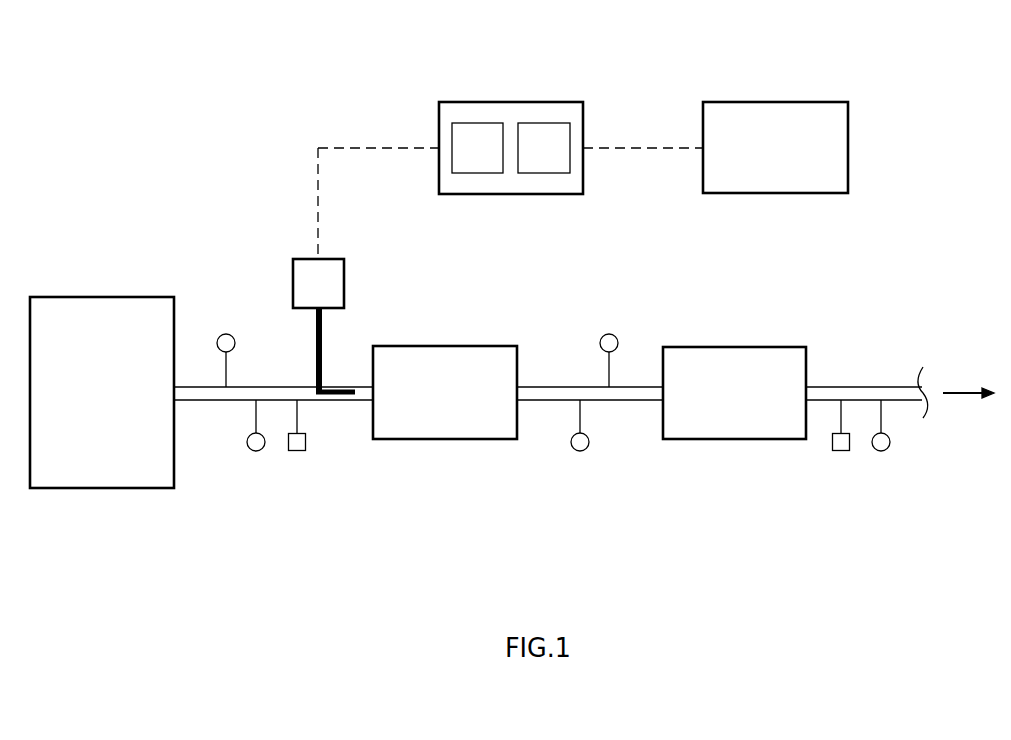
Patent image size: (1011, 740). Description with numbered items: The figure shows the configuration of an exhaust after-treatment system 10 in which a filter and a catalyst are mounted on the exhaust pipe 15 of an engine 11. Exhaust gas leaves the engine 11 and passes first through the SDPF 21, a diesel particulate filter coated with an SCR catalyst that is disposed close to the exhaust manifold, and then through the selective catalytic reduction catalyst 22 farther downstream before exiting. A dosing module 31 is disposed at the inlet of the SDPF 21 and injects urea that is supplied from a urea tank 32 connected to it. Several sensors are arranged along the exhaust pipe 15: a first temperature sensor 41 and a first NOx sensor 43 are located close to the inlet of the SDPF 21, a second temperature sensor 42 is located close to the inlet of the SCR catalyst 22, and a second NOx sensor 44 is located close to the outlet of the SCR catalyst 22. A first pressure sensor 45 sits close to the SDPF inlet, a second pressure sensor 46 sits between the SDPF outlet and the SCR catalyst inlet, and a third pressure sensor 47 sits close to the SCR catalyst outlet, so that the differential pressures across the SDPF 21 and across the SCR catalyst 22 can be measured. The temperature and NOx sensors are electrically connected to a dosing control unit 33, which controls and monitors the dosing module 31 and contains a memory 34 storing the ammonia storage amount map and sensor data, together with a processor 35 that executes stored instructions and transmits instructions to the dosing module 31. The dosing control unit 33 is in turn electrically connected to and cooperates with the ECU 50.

The exhaust after-treatment system 10 is at (123, 82).
The engine 11 is at (101, 297).
The exhaust pipe 15 is at (213, 400).
The SDPF 21 is at (445, 439).
The selective catalytic reduction catalyst 22 is at (733, 439).
The dosing module 31 is at (331, 388).
The urea tank 32 is at (344, 283).
The dosing control unit 33 is at (510, 102).
The memory 34 is at (542, 173).
The processor 35 is at (477, 173).
The first temperature sensor 41 is at (226, 334).
The second temperature sensor 42 is at (609, 334).
The first NOx sensor 43 is at (297, 451).
The second NOx sensor 44 is at (841, 451).
The first pressure sensor 45 is at (256, 451).
The second pressure sensor 46 is at (580, 451).
The third pressure sensor 47 is at (881, 451).
The ECU 50 is at (776, 102).